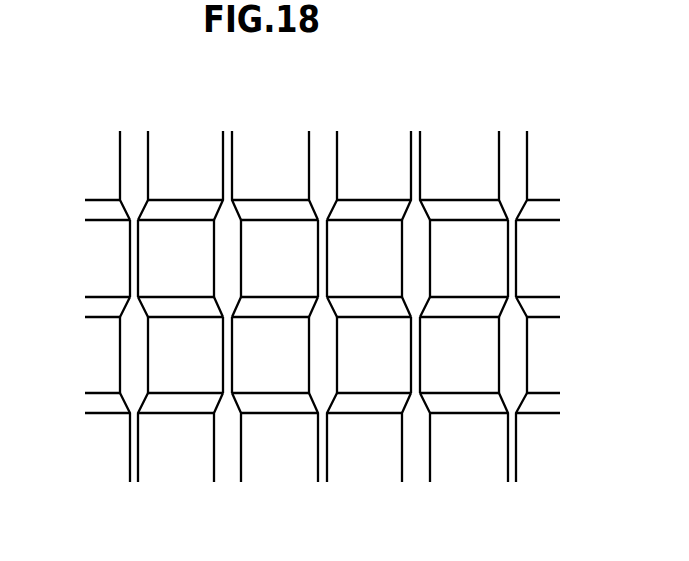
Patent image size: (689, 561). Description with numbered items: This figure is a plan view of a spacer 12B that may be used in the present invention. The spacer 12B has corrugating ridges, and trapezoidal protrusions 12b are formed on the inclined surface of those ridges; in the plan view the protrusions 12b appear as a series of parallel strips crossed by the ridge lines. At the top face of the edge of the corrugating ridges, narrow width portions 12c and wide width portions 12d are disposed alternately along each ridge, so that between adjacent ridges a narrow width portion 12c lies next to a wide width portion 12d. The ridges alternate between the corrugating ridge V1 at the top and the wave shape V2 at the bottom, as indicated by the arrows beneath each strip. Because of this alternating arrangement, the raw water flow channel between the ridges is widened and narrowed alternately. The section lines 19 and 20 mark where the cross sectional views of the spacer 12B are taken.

The trapezoidal protrusion 12b is at (327, 283).
The narrow width portion 12c is at (345, 353).
The wide width portion 12d is at (341, 353).
The spacer 12B is at (451, 104).
The cross sectional view line for FIG. 19 is at (86, 255).
The cross sectional view line for FIG. 20 is at (86, 350).
The corrugating ridge at the top V1 is at (510, 495).
The wave shape at the bottom V2 is at (416, 495).